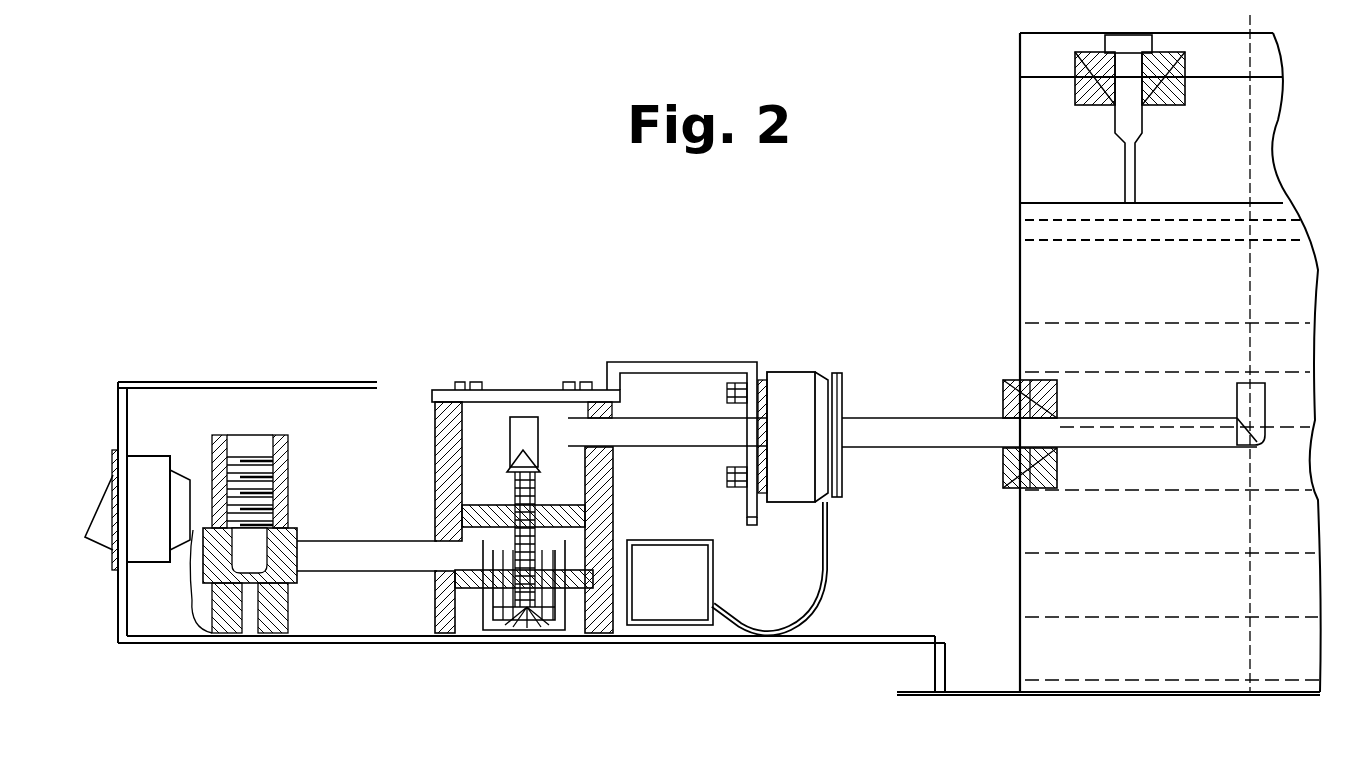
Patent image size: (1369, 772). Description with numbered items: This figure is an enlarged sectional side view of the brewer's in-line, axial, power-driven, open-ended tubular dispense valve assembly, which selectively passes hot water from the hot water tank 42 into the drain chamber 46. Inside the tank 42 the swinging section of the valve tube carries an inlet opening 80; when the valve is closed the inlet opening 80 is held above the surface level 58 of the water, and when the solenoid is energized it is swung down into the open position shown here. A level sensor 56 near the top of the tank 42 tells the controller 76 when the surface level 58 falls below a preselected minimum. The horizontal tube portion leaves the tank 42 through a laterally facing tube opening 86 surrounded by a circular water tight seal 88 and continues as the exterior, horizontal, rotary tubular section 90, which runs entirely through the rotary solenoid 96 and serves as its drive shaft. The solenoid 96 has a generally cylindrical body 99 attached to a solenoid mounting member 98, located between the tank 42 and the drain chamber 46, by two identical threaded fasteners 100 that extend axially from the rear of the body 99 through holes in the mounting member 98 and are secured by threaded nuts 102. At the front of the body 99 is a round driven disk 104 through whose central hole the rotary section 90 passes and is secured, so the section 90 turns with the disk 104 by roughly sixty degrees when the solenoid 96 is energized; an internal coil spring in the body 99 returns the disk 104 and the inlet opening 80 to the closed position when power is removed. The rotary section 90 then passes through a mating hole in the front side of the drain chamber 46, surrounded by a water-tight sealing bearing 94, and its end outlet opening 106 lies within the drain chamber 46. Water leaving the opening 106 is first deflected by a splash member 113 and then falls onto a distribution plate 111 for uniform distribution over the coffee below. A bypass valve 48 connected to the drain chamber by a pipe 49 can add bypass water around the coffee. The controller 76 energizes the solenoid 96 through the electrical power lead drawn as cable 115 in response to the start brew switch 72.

The hot water tank 42 is at (1020, 240).
The drain chamber 46 is at (490, 478).
The bypass valve 48 is at (290, 497).
The pipe 49 is at (435, 537).
The level sensor 56 is at (1110, 128).
The surface level 58 is at (1055, 200).
The start brew switch 72 is at (90, 520).
The controller 76 is at (680, 625).
The inlet opening 80 is at (1255, 382).
The tube opening 86 is at (1020, 435).
The water tight seal 88 is at (1005, 378).
The rotary tubular section 90 is at (897, 447).
The sealing bearing 94 is at (613, 503).
The rotary solenoid 96 is at (790, 400).
The solenoid mounting member 98 is at (752, 520).
The cylindrical body 99 is at (800, 392).
The threaded fasteners 100 is at (722, 390).
The threaded nuts 102 is at (735, 470).
The driven disk 104 is at (845, 385).
The end outlet opening 106 is at (567, 430).
The distribution plate 111 is at (528, 635).
The splash member 113 is at (520, 425).
The cable 115 is at (830, 595).